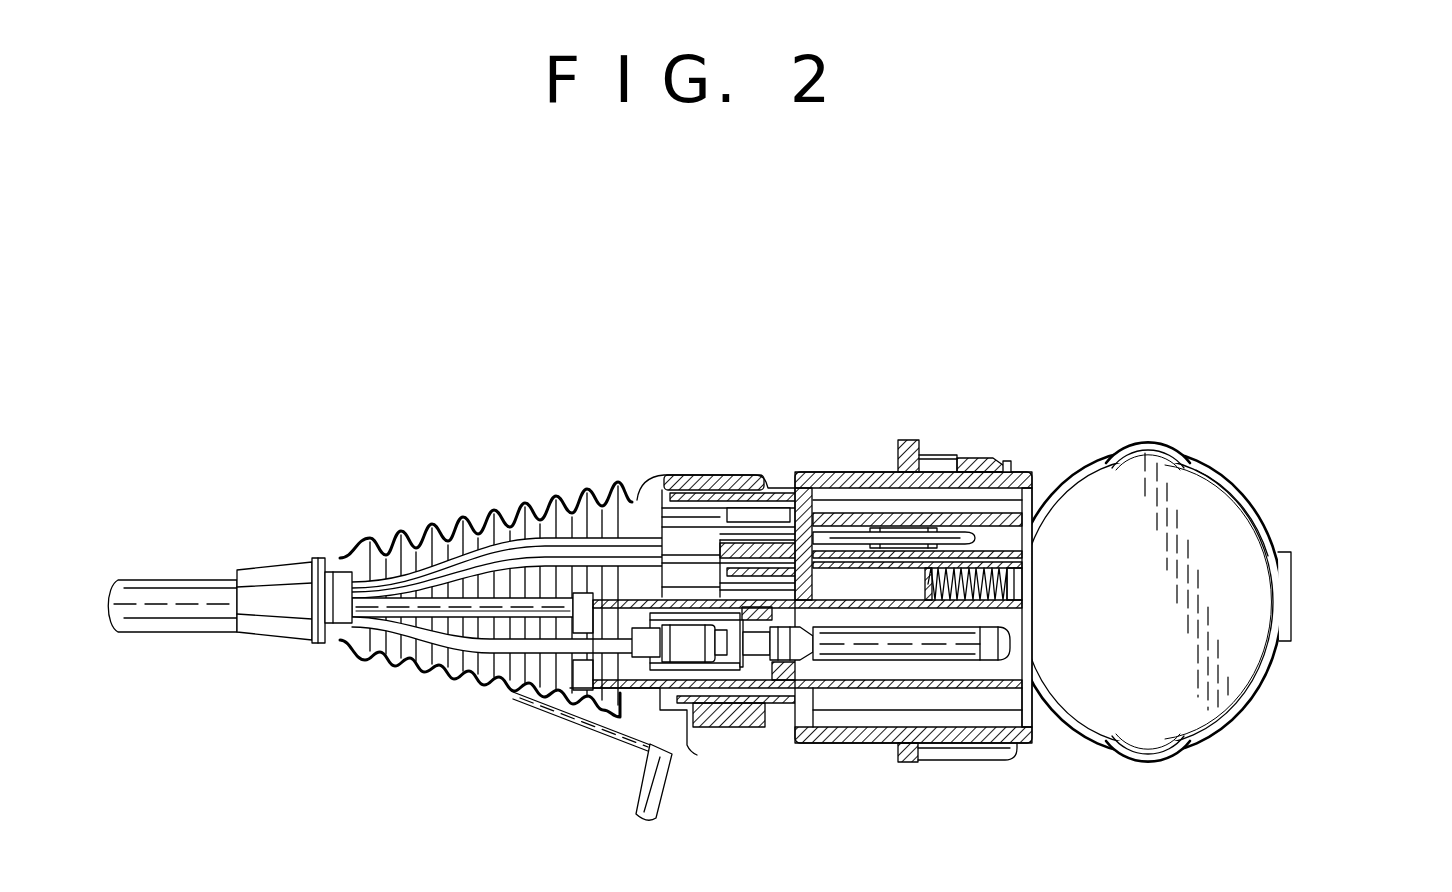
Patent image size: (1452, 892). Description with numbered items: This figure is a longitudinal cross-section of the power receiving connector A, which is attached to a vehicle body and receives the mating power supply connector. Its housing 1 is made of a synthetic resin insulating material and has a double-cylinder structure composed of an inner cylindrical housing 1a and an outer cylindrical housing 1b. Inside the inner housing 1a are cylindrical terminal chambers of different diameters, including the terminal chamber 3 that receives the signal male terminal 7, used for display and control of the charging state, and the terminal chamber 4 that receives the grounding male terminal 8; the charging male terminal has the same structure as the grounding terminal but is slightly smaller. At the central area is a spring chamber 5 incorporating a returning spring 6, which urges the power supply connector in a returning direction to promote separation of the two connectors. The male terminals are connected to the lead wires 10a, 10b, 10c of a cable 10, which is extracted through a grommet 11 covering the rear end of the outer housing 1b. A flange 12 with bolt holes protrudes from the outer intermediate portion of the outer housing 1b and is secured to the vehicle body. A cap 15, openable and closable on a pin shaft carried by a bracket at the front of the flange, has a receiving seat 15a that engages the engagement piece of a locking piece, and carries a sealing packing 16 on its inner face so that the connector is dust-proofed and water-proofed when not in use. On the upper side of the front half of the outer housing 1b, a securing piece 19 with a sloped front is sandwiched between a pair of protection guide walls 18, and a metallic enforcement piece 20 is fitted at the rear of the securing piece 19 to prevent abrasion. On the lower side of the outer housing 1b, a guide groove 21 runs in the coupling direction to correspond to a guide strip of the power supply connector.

The housing 1 is at (832, 470).
The inner cylindrical housing 1a is at (847, 693).
The outer cylindrical housing 1b is at (780, 478).
The terminal chamber 3 is at (1013, 538).
The terminal chamber 4 is at (1010, 668).
The spring chamber 5 is at (1013, 573).
The returning spring 6 is at (1013, 583).
The signal male terminal 7 is at (963, 538).
The grounding male terminal 8 is at (943, 693).
The cable 10 is at (175, 583).
The lead wire 10a is at (440, 607).
The lead wire 10b is at (530, 538).
The lead wire 10c is at (498, 653).
The grommet 11 is at (415, 527).
The flange 12 is at (905, 440).
The cap 15 is at (1228, 477).
The receiving seat 15a is at (1292, 594).
The sealing packing 16 is at (1223, 660).
The protection guide walls 18 is at (935, 455).
The securing piece 19 is at (1012, 458).
The metallic enforcement piece 20 is at (965, 456).
The guide groove 21 is at (1003, 720).
The power receiving connector A is at (768, 352).